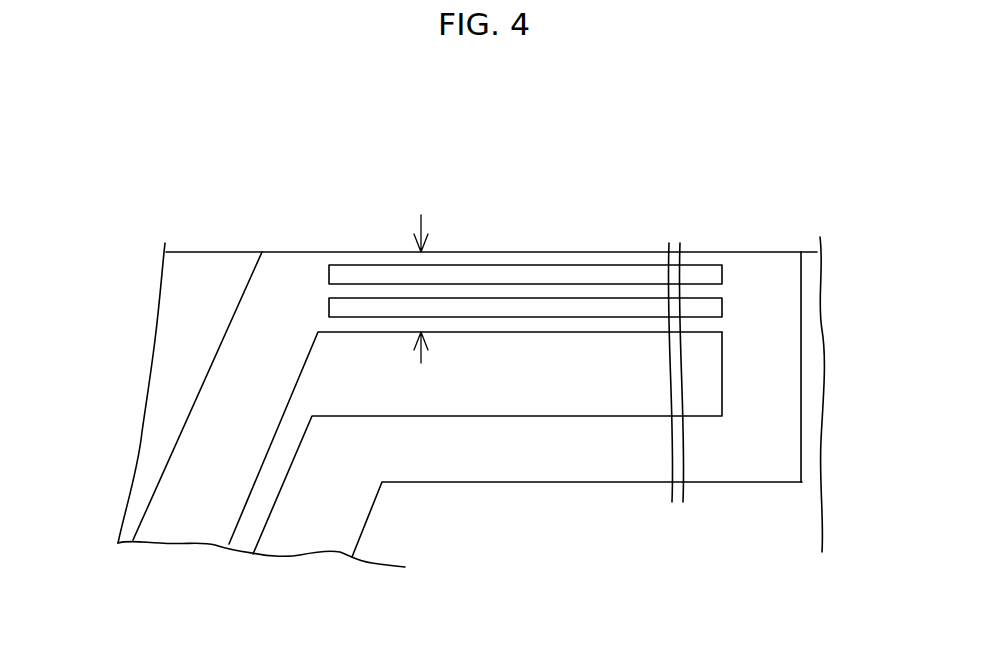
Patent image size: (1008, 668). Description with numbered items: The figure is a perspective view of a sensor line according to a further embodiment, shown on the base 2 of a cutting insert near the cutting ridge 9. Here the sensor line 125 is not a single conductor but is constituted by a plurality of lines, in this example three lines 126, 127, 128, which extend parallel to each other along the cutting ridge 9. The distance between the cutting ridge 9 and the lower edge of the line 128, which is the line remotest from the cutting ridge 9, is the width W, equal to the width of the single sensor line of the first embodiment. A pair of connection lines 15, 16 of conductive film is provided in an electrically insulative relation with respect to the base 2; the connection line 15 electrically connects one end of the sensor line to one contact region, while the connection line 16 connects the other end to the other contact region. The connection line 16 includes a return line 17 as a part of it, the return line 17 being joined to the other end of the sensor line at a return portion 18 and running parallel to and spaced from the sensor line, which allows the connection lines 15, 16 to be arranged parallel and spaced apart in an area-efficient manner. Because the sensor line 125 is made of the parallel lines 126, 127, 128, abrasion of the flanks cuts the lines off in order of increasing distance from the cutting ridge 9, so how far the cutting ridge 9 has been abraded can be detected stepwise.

The base 2 is at (205, 280).
The cutting ridge 9 is at (373, 253).
The connection line 15 is at (190, 483).
The connection line 16 is at (348, 512).
The return line 17 is at (580, 468).
The return portion 18 is at (768, 374).
The sensor line 125 is at (475, 324).
The line 126 is at (477, 258).
The line 127 is at (535, 290).
The line 128 is at (478, 162).